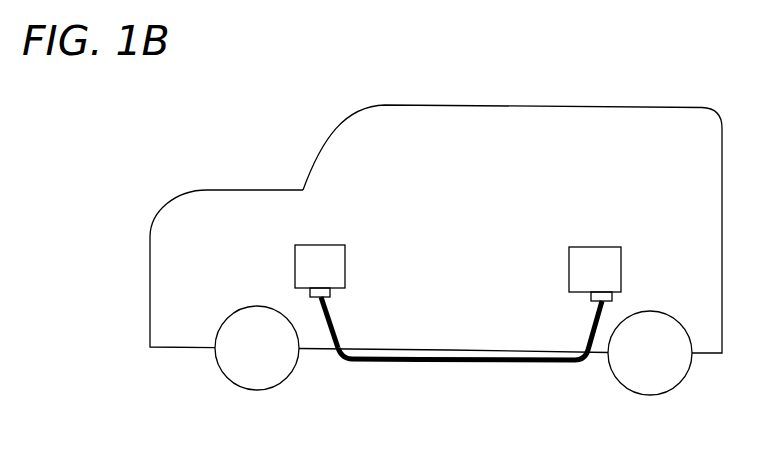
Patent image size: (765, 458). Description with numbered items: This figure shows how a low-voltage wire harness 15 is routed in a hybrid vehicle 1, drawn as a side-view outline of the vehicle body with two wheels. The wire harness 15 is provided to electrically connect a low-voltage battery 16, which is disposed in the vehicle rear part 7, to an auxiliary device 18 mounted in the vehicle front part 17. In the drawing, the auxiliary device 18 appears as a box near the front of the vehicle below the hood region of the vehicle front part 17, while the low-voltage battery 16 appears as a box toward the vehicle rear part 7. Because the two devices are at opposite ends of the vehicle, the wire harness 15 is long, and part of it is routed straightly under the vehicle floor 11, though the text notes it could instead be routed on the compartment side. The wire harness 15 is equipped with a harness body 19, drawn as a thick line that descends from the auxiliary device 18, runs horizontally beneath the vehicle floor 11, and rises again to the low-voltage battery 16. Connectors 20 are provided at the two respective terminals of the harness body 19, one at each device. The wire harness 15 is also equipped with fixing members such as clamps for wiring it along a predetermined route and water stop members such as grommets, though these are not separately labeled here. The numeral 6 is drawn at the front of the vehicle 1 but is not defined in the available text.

The hybrid vehicle 1 is at (582, 106).
The front portion of vehicle 6 is at (165, 322).
The vehicle rear part 7 is at (702, 322).
The vehicle front part 17 is at (277, 203).
The auxiliary device 18 is at (331, 250).
The low-voltage battery 16 is at (596, 257).
The connectors 20 is at (329, 290).
The harness body 19 is at (338, 338).
The wire harness 15 is at (372, 362).
The vehicle floor 11 is at (522, 358).